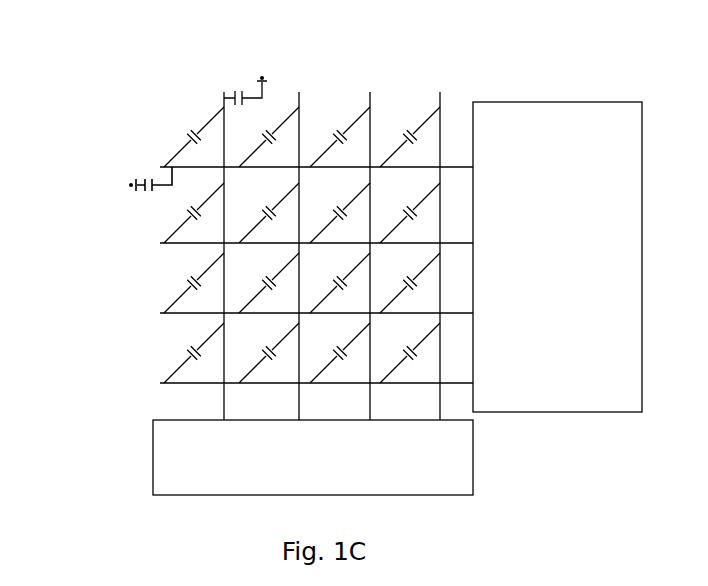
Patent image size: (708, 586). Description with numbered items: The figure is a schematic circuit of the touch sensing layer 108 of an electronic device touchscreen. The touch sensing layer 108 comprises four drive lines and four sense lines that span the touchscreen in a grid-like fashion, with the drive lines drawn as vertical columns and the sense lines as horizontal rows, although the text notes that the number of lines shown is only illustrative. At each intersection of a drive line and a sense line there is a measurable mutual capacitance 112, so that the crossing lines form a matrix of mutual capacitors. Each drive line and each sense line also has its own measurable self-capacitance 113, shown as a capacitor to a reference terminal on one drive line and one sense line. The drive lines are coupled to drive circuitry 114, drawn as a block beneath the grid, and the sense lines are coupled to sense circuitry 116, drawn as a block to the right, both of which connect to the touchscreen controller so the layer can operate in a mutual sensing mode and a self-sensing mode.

The touch sensing layer 108 is at (249, 223).
The mutual capacitance 112 is at (188, 138).
The self-capacitance 113 is at (243, 105).
The drive circuitry 114 is at (153, 468).
The sense circuitry 116 is at (642, 140).